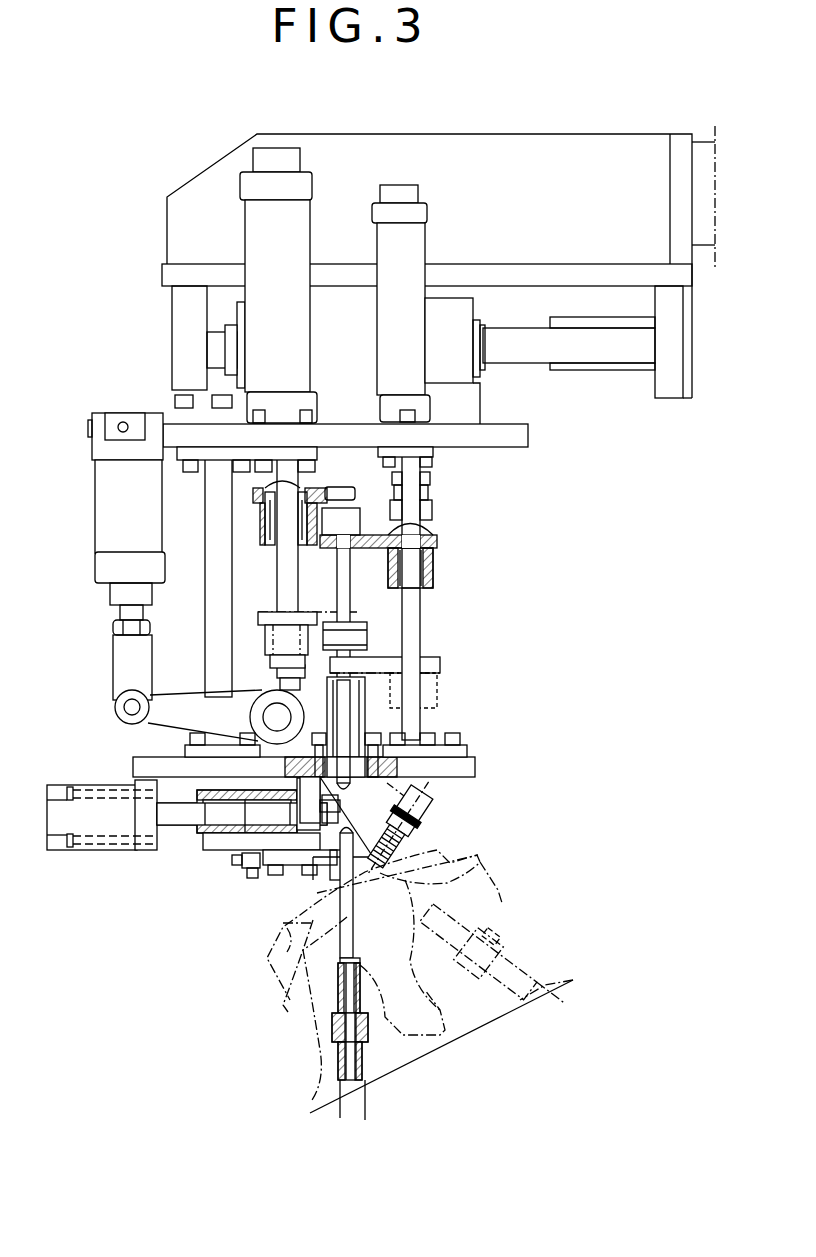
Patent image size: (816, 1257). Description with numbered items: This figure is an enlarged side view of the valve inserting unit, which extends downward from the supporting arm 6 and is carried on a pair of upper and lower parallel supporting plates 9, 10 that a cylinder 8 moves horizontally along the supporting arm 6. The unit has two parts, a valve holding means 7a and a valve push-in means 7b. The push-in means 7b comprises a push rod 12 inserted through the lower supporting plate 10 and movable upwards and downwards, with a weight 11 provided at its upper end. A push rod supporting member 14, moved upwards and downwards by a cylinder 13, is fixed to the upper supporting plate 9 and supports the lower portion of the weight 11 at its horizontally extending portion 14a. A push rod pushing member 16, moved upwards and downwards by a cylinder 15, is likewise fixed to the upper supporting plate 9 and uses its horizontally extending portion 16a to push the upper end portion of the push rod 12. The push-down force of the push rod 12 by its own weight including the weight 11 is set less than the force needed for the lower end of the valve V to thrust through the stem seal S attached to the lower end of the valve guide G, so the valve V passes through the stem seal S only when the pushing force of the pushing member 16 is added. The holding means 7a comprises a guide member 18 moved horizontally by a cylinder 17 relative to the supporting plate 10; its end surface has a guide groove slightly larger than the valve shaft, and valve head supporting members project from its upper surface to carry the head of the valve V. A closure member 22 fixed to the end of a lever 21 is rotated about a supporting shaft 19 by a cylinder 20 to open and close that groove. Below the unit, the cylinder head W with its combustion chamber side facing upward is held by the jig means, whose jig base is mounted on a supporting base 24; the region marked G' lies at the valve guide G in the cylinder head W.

The supporting arm 6 is at (480, 150).
The valve holding means 7a is at (233, 868).
The valve push-in means 7b is at (463, 550).
The cylinder 8 is at (600, 367).
The upper supporting plate 9 is at (515, 436).
The lower supporting plate 10 is at (467, 762).
The weight 11 is at (348, 522).
The push rod 12 is at (345, 597).
The cylinder 13 is at (430, 237).
The push rod supporting member 14 is at (433, 576).
The horizontally extending portion 14a is at (388, 532).
The cylinder 15 is at (258, 236).
The push rod pushing member 16 is at (266, 540).
The horizontally extending portion 16a is at (337, 493).
The cylinder 17 is at (86, 800).
The guide member 18 is at (297, 855).
The supporting shaft 19 is at (276, 716).
The cylinder 20 is at (115, 486).
The lever 21 is at (400, 856).
The closure member 22 is at (395, 800).
The supporting base 24 is at (370, 1097).
The valve guide G is at (404, 975).
The gear case boss G' is at (493, 939).
The stem seal S is at (335, 1030).
The valve V is at (387, 883).
The cylinder head W is at (432, 1025).